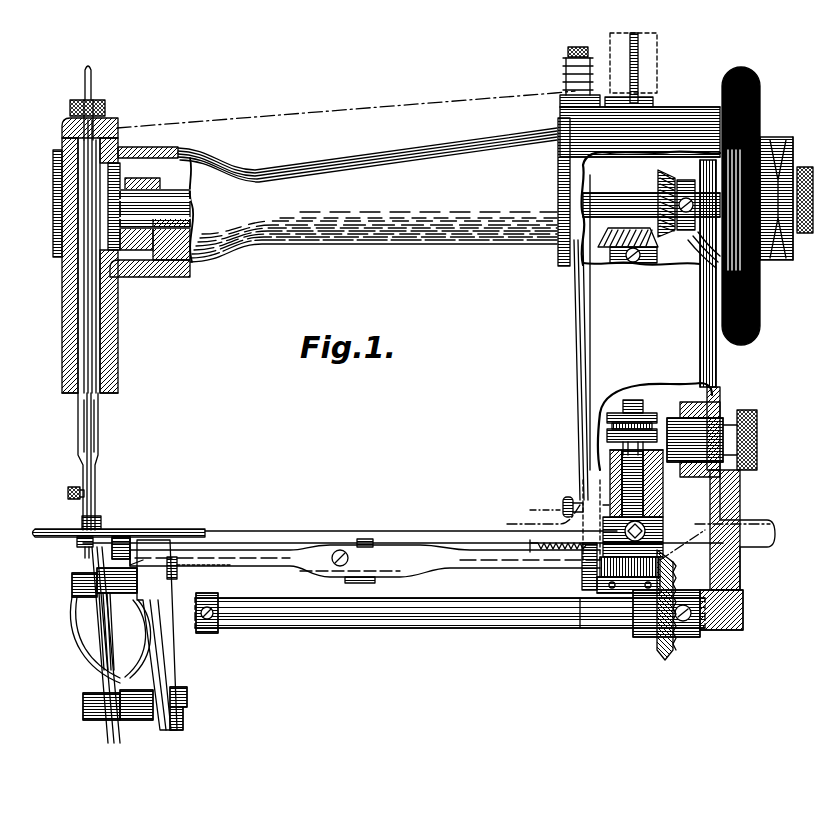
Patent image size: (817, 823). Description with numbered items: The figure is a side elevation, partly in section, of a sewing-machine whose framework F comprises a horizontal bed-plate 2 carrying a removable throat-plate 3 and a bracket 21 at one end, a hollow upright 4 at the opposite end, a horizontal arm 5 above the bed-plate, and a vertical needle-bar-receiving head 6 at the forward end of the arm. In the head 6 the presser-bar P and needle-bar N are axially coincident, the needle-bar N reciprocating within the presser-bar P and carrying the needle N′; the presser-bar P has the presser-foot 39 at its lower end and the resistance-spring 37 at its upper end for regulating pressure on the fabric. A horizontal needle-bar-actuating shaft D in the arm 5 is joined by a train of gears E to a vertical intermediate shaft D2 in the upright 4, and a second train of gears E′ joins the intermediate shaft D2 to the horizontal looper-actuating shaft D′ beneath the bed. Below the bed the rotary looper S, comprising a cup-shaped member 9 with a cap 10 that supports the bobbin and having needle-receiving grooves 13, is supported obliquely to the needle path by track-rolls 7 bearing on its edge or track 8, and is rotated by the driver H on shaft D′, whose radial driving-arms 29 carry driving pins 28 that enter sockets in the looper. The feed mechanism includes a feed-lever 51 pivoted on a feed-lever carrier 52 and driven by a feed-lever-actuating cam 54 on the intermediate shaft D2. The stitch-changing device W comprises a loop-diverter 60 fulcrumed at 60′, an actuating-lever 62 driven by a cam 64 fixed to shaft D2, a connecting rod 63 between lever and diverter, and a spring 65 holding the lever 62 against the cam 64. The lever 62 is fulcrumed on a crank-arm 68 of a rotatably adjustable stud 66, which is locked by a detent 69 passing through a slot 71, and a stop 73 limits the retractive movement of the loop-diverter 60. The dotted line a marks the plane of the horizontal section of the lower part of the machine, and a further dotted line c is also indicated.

The resistance-spring 37 is at (105, 116).
The needle-bar-actuating shaft D is at (180, 205).
The horizontal arm 5 is at (346, 178).
The train of gears E is at (651, 216).
The hollow upright 4 is at (640, 288).
The needle-bar-receiving head 6 is at (115, 335).
The framework F is at (566, 370).
The presser-bar P is at (78, 400).
The needle-bar N is at (95, 438).
The needle N′ is at (95, 504).
The throat-plate 3 is at (45, 531).
The presser-foot 39 is at (82, 520).
The fulcrum of loop-diverter 60′ is at (118, 537).
The stitch-changing device W is at (130, 537).
The loop-diverter 60 is at (82, 545).
The stop 73 is at (172, 557).
The feed-lever 51 is at (238, 550).
The connection 63 is at (270, 560).
The bed-plate 2 is at (322, 543).
The feed-lever carrier 52 is at (378, 545).
The intermediate shaft D2 is at (612, 458).
The detent device 69 is at (566, 508).
The slot 71 is at (585, 508).
The axis line c is at (563, 509).
The dotted line a a is at (630, 532).
The stud 66 is at (645, 492).
The feed-lever-actuating cam 54 is at (650, 535).
The spring 65 is at (545, 552).
The crank-arm 68 is at (585, 555).
The train of gears E′ is at (666, 603).
The track-rolls 7 is at (95, 590).
The rotary looper S is at (80, 625).
The cap 10 is at (90, 630).
The needle-receiving grooves 13 is at (100, 645).
The cup-shaped member 9 is at (100, 655).
The track 8 is at (110, 668).
The driving pins 28 is at (112, 683).
The driving-arms 29 is at (148, 640).
The rotary driver H is at (150, 605).
The looper-actuating shaft D′ is at (450, 624).
The actuating-lever 62 is at (600, 596).
The cam 64 is at (628, 598).
The pivot 21 is at (172, 732).